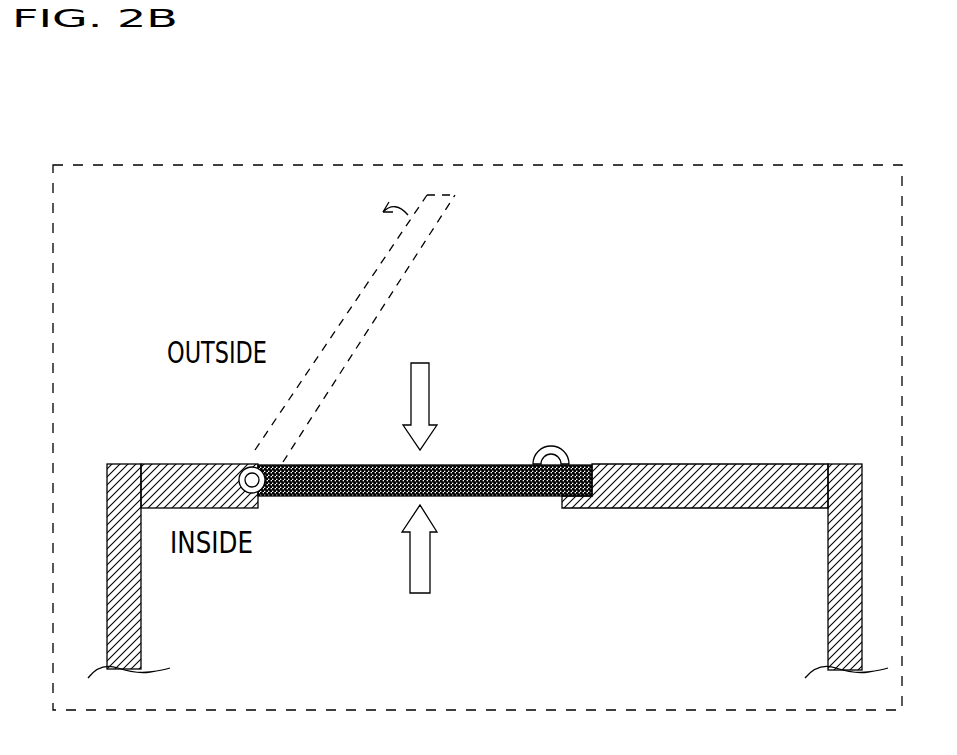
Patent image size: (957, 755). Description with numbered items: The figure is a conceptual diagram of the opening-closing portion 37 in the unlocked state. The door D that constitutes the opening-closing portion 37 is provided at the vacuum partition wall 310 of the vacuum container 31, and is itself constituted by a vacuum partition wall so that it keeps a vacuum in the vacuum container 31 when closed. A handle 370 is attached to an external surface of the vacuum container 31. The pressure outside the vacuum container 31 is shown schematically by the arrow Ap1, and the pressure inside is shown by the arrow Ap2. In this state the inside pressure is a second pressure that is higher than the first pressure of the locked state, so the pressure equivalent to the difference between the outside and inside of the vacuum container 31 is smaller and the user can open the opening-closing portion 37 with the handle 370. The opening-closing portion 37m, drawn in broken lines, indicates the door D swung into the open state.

The vacuum container 31 is at (843, 165).
The vacuum partition wall 310 is at (178, 486).
The opening-closing portion 37 is at (354, 463).
The opening-closing portion in the open state 37m is at (365, 293).
The handle 370 is at (552, 434).
The arrow indicating pressure outside of the vacuum container Ap1 is at (431, 378).
The arrow indicating pressure inside of the vacuum container Ap2 is at (410, 568).